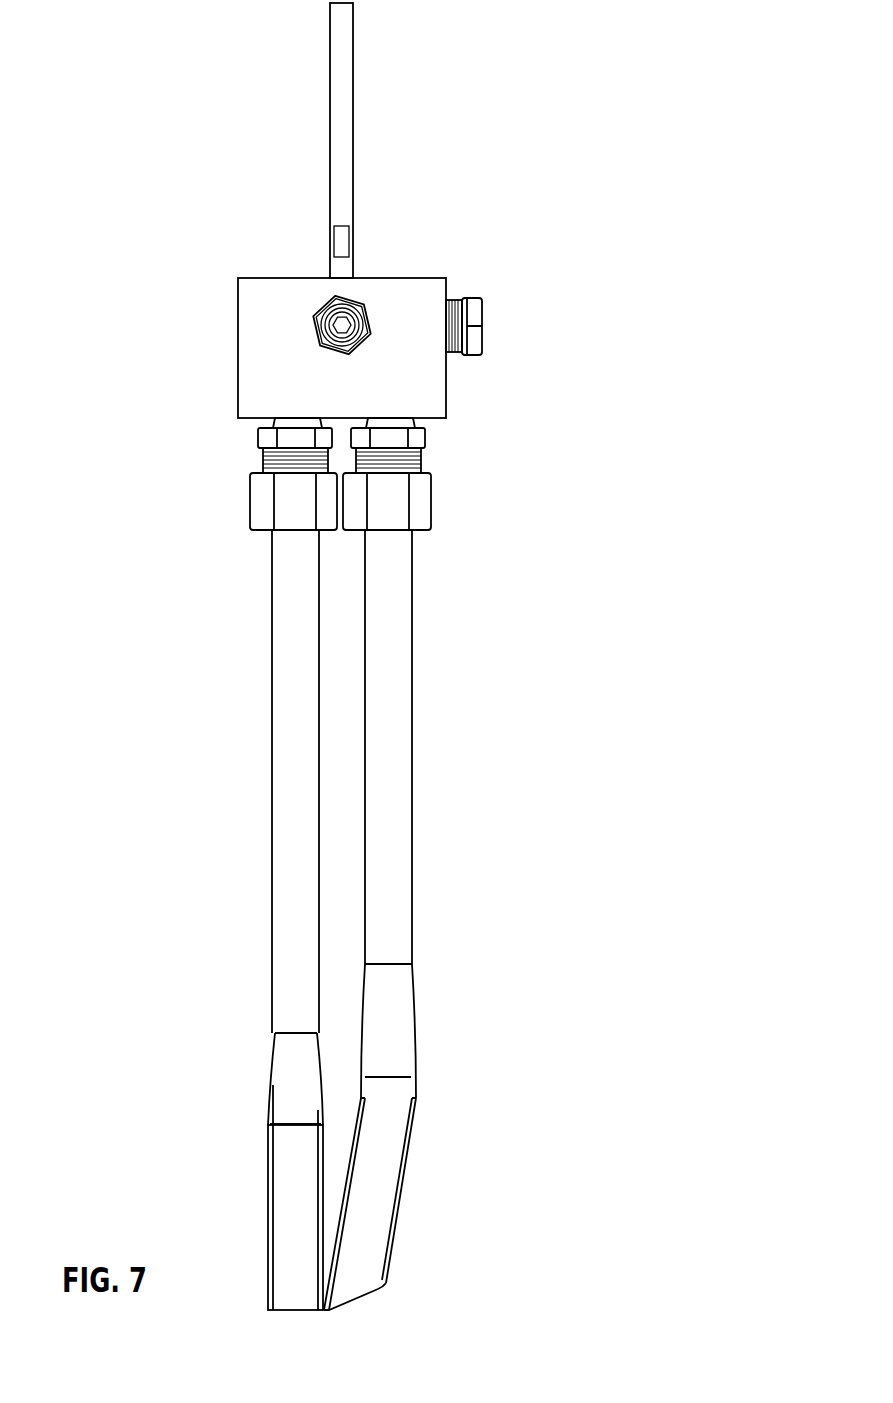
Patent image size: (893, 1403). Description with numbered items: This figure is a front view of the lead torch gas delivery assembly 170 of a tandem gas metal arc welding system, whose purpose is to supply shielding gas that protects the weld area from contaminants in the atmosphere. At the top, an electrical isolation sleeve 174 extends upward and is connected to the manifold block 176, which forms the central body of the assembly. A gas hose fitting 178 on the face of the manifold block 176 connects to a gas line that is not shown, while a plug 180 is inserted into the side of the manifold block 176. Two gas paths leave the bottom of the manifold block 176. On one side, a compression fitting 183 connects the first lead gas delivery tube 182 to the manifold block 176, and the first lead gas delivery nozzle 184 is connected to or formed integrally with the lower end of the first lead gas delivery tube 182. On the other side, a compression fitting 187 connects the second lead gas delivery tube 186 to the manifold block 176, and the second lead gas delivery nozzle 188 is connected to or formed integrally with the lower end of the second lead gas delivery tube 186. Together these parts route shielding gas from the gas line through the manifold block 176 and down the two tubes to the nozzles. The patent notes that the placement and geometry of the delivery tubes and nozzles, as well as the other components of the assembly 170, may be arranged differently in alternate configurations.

The lead torch gas delivery assembly 170 is at (630, 254).
The electrical isolation sleeve 174 is at (353, 128).
The manifold block 176 is at (238, 368).
The gas hose fitting 178 is at (313, 319).
The plug 180 is at (482, 323).
The first lead gas delivery tube 182 is at (412, 735).
The compression fitting 183 is at (433, 500).
The first lead gas delivery nozzle 184 is at (407, 1165).
The second lead gas delivery tube 186 is at (272, 770).
The compression fitting 187 is at (250, 502).
The second lead gas delivery nozzle 188 is at (267, 1160).